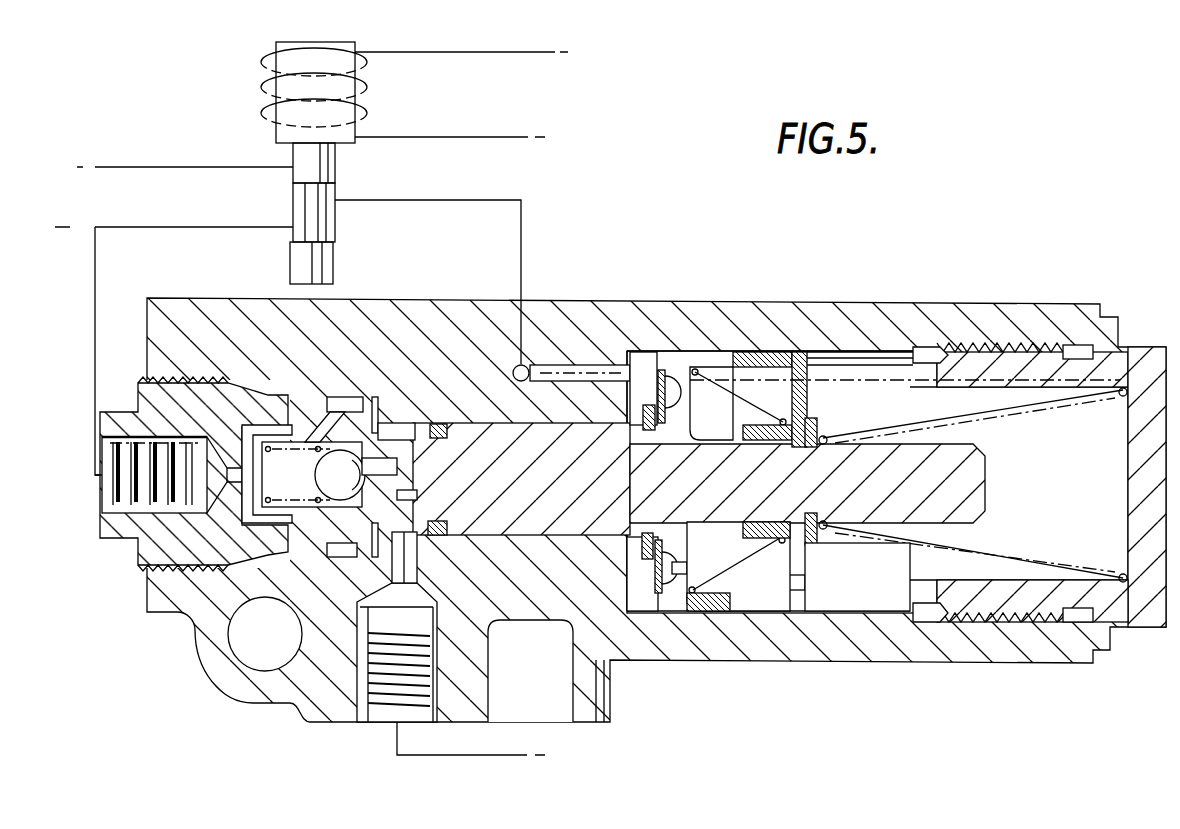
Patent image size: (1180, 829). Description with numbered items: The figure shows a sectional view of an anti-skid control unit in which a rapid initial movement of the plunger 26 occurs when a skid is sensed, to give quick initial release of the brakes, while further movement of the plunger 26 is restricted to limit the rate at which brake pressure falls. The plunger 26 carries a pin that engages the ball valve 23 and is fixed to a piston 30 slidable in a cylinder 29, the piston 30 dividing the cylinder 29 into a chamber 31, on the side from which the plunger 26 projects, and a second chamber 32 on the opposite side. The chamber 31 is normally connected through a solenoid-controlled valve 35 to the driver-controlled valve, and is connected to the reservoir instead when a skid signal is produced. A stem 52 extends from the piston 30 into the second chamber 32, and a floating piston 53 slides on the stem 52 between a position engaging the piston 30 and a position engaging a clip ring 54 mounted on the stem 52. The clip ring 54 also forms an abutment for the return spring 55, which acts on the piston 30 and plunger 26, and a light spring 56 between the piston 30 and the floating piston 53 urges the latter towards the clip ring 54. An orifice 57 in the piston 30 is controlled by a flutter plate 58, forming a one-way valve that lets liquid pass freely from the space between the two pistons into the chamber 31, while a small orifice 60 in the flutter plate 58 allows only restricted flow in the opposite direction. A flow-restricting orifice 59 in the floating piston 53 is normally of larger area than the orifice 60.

The ball valve 23 is at (330, 470).
The plunger 26 is at (516, 497).
The cylinder 29 is at (888, 618).
The piston 30 is at (713, 603).
The chamber 31 is at (650, 387).
The second chamber 32 is at (1040, 437).
The valve 35 is at (314, 160).
The stem 52 is at (950, 498).
The floating piston 53 is at (795, 607).
The clip ring 54 is at (825, 543).
The return spring 55 is at (950, 420).
The light spring 56 is at (745, 400).
The orifice 57 is at (678, 572).
The flutter plate 58 is at (660, 548).
The flow-restricting orifice 59 is at (805, 585).
The small orifice 60 is at (655, 562).